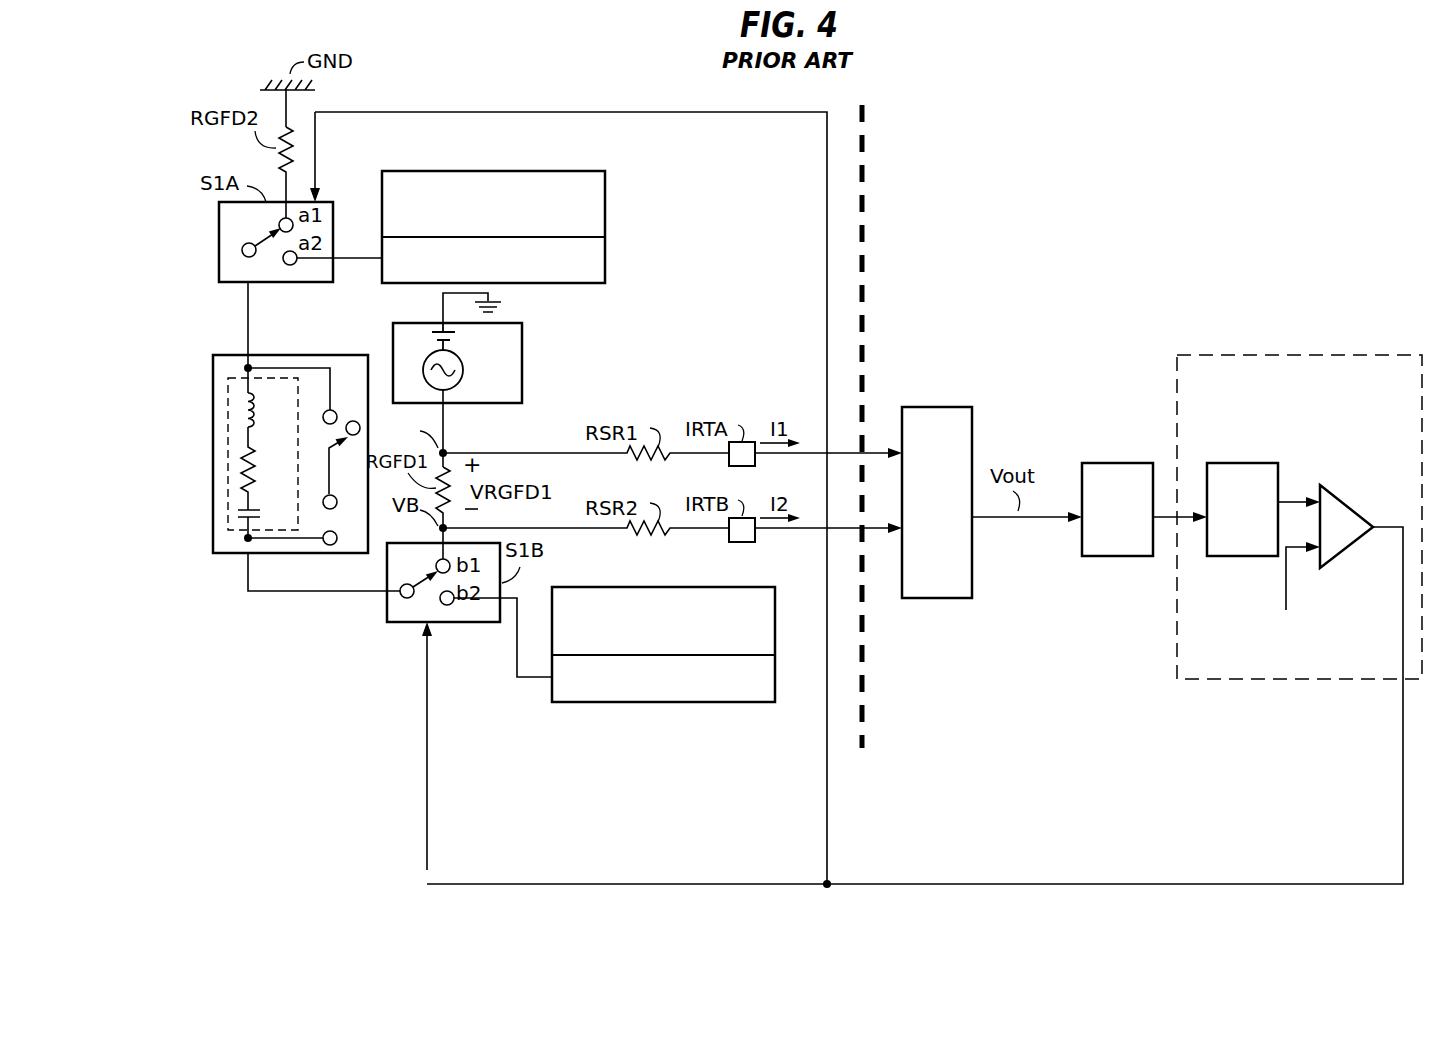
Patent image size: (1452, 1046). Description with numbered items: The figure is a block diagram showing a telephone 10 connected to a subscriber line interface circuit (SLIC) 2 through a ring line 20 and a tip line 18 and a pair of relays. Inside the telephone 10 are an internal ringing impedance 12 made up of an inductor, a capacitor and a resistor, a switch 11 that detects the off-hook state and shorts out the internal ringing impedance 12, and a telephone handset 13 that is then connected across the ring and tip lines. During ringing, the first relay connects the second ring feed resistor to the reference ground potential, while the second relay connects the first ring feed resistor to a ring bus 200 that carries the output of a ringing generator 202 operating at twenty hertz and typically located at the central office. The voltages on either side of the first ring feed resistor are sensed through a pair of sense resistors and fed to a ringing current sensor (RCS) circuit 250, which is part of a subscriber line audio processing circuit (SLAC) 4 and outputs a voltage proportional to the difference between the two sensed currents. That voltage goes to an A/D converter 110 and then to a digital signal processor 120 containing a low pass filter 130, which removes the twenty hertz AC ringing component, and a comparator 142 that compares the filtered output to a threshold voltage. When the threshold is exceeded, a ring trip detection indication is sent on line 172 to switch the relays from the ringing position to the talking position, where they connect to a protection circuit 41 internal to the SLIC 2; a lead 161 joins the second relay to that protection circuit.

The subscriber line interface circuit (SLIC) 2 is at (606, 213).
The protection circuit 41 is at (606, 265).
The tip line 18 is at (248, 330).
The telephone 10 is at (265, 439).
The switch 11 is at (338, 411).
The internal ringing impedance 12 is at (228, 418).
The telephone handset 13 is at (338, 535).
The ring line 20 is at (318, 596).
The ring bus 200 is at (449, 448).
The ringing generator 202 is at (522, 380).
The lead to protection circuit 161 is at (517, 657).
The line 172 is at (838, 883).
The subscriber line audio processing circuit (SLAC) 4 is at (1033, 208).
The ringing current sensor (RCS) circuit 250 is at (935, 407).
The A/D converter 110 is at (1100, 463).
The Digital Signal Processor (DSP) 120 is at (1299, 501).
The low pass filter 130 is at (1225, 463).
The comparator 142 is at (1340, 496).